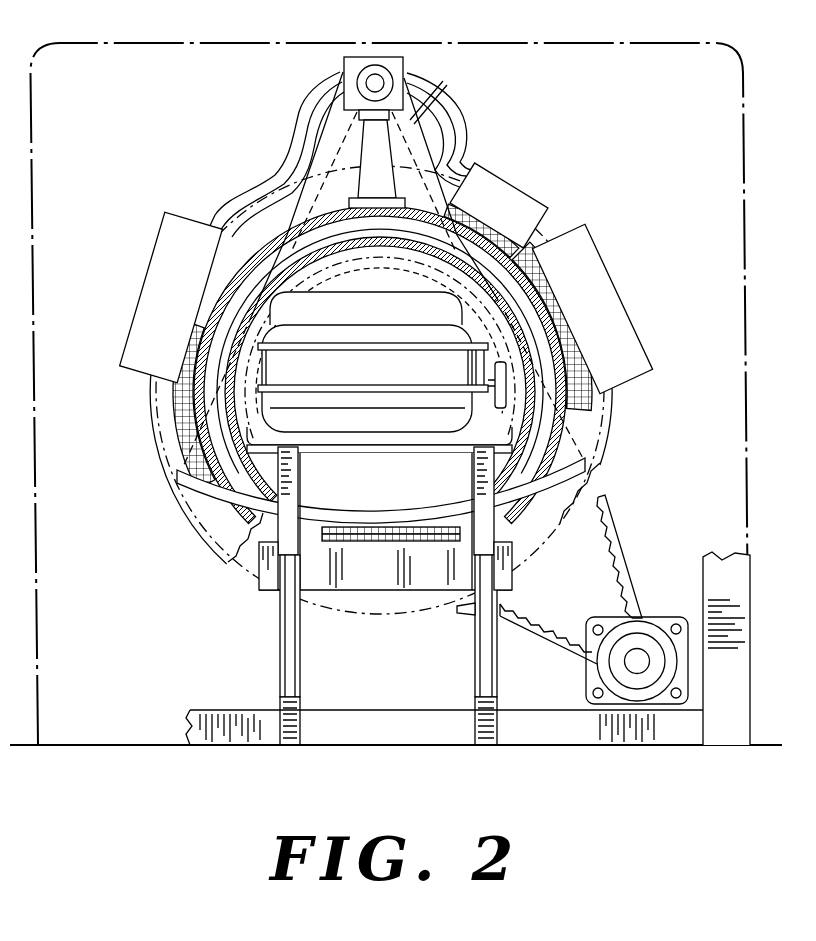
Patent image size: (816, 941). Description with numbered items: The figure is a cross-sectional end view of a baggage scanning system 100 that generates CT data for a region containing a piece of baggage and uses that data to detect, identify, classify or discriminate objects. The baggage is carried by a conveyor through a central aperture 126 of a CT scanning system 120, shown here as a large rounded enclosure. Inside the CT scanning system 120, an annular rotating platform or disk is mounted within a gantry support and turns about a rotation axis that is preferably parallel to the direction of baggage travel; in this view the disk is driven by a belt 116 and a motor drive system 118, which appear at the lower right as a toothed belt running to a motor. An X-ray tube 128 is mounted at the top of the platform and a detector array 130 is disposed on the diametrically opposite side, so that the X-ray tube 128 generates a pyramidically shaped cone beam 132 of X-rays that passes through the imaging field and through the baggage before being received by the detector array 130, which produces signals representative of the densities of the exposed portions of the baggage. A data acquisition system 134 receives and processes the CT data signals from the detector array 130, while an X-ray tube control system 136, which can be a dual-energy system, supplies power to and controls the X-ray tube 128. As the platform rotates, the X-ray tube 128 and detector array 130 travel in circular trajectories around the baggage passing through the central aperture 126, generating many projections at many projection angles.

The baggage scanning system 100 is at (396, 751).
The belt 116 is at (570, 579).
The motor drive system 118 is at (643, 642).
The CT scanning system 120 is at (389, 375).
The central aperture 126 is at (342, 507).
The X-ray tube 128 is at (345, 107).
The detector array 130 is at (342, 474).
The cone beam 132 is at (400, 390).
The data acquisition system 134 is at (346, 571).
The X-ray tube control system 136 is at (148, 297).